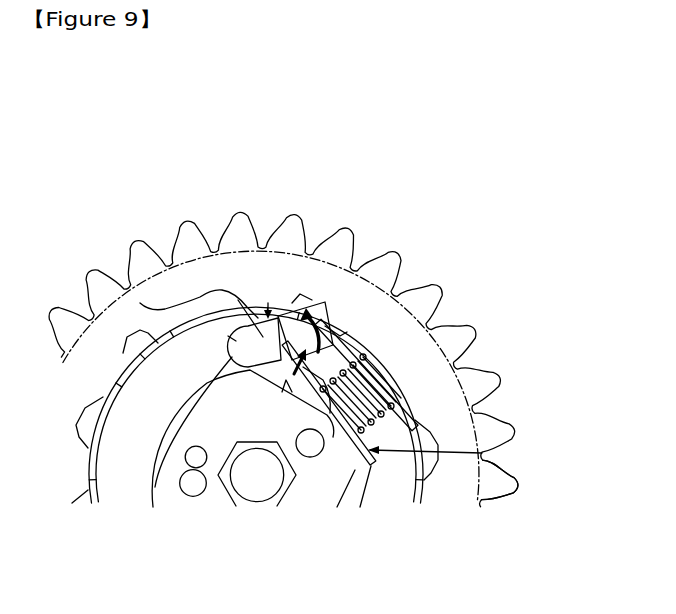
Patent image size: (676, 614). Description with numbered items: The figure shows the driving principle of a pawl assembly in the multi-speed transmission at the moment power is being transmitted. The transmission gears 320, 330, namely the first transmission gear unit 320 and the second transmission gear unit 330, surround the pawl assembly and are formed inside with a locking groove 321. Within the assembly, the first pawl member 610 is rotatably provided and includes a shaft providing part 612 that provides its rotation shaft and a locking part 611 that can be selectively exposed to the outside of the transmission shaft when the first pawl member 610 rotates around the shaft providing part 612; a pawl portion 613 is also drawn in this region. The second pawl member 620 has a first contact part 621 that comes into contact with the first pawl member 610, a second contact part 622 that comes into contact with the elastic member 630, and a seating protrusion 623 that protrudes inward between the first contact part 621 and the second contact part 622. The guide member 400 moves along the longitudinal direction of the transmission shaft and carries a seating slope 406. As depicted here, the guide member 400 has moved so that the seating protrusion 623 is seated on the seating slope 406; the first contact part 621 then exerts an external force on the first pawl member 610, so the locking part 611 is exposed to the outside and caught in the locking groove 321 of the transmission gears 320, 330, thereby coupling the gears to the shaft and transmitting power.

The first transmission gear unit 320 is at (283, 300).
The second transmission gear unit 330 is at (243, 202).
The locking groove 321 is at (320, 298).
The first pawl member 610 is at (238, 300).
The locking part 611 is at (345, 322).
The shaft providing part 612 is at (140, 303).
The pawl 613 is at (205, 303).
The first contact part 621 is at (420, 350).
The second contact part 622 is at (345, 435).
The seating protrusion 623 is at (320, 395).
The elastic member 630 is at (444, 381).
The second pawl member 620 is at (522, 484).
The guide member 400 is at (212, 505).
The seating slope 406 is at (292, 360).